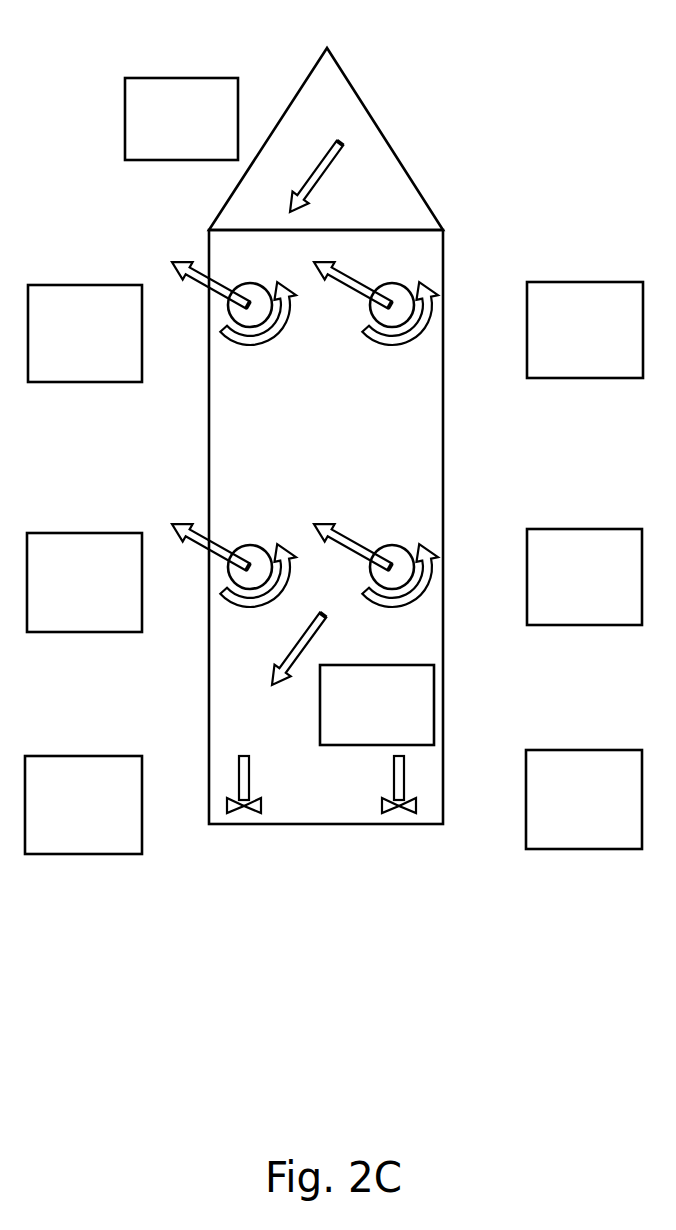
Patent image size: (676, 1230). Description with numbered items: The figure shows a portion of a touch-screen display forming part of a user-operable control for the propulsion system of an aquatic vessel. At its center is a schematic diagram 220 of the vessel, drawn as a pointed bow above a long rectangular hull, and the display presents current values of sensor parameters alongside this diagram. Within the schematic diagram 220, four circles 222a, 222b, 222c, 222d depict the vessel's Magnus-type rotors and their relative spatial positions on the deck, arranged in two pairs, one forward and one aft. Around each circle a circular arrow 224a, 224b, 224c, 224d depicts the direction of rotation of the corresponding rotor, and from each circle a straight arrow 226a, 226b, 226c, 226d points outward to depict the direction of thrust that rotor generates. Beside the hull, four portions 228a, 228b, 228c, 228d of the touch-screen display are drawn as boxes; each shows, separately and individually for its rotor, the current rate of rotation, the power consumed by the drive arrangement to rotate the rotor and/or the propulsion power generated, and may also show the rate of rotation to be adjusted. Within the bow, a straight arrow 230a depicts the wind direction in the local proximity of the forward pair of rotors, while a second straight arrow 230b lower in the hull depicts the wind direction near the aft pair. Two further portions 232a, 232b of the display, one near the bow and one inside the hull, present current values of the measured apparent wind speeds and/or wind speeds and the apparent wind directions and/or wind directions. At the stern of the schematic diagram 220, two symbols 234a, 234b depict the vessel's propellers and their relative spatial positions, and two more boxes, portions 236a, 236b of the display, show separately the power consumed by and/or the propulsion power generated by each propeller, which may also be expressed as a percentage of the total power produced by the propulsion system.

The schematic diagram 220 is at (372, 116).
The circle 222a is at (235, 330).
The circle 222b is at (405, 307).
The circle 222c is at (240, 577).
The circle 222d is at (395, 555).
The circular arrow 224a is at (245, 345).
The circular arrow 224b is at (385, 335).
The circular arrow 224c is at (225, 595).
The circular arrow 224d is at (395, 605).
The straight arrow 226a is at (172, 262).
The straight arrow 226b is at (355, 285).
The straight arrow 226c is at (172, 522).
The straight arrow 226d is at (380, 523).
The portion of the touch-screen display 228a is at (114, 348).
The portion of the touch-screen display 228b is at (614, 345).
The portion of the touch-screen display 228c is at (114, 597).
The portion of the touch-screen display 228d is at (614, 592).
The straight arrow 230a is at (330, 165).
The straight arrow 230b is at (293, 800).
The portion of the touch-screen display 232a is at (210, 140).
The portion of the touch-screen display 232b is at (406, 725).
The symbol 234a is at (233, 812).
The symbol 234b is at (413, 806).
The portion of the touch-screen display 236a is at (113, 820).
The portion of the touch-screen display 236b is at (613, 814).